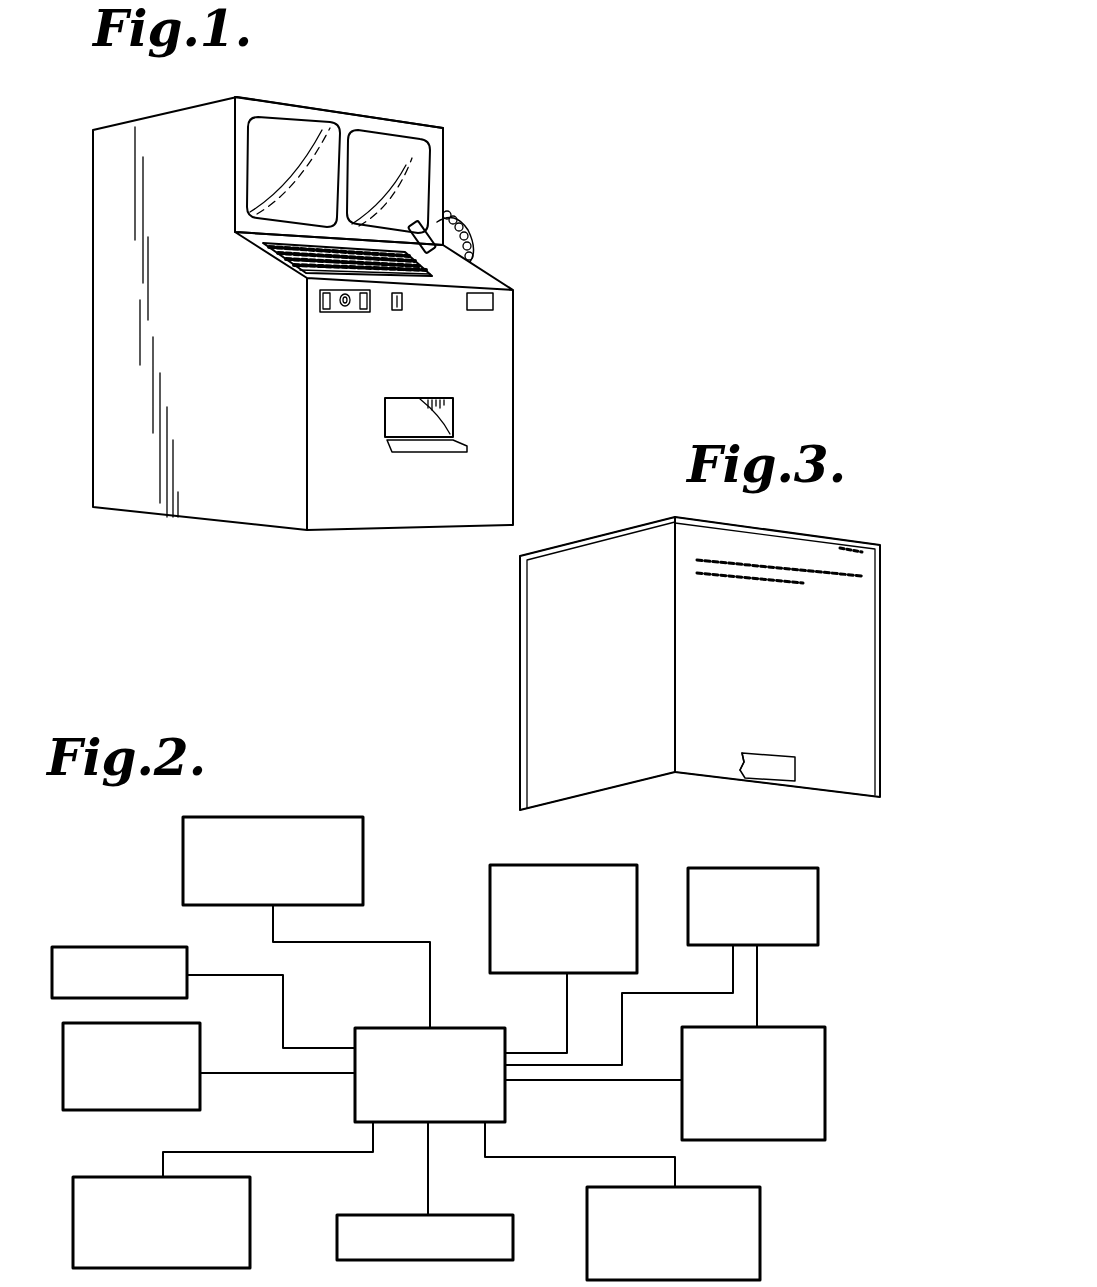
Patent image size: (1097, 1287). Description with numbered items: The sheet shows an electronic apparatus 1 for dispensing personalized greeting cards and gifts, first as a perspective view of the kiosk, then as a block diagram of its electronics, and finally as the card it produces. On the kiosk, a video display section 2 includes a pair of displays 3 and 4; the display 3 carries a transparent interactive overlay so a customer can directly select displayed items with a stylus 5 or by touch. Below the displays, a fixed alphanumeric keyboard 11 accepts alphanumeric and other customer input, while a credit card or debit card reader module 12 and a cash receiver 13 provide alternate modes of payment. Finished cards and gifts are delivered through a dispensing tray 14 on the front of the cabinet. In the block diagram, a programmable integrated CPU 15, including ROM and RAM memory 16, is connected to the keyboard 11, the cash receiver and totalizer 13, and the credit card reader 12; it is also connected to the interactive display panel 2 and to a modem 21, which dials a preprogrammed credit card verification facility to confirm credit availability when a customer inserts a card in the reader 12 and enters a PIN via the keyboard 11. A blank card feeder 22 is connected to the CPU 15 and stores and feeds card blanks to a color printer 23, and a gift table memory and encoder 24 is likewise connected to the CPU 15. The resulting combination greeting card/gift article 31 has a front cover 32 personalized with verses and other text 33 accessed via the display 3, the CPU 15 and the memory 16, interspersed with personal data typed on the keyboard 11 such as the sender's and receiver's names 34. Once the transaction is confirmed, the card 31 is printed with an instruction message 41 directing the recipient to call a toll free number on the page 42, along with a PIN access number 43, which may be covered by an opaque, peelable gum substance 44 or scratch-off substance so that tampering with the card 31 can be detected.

In FIG. 1, the apparatus for dispensing personalized greeting cards and gifts 1 is at (440, 82).
In FIG. 1, the video display section 2 is at (352, 118).
In FIG. 2, the video display section 2 is at (309, 817).
In FIG. 1, the display 3 is at (262, 190).
In FIG. 1, the display 4 is at (417, 203).
In FIG. 1, the stylus 5 is at (427, 230).
In FIG. 1, the alphanumeric keyboard 11 is at (272, 255).
In FIG. 2, the alphanumeric keyboard 11 is at (490, 1227).
In FIG. 1, the credit card or debit card reader module 12 is at (467, 317).
In FIG. 2, the credit card or debit card reader module 12 is at (752, 1238).
In FIG. 1, the cash receiver 13 is at (320, 316).
In FIG. 2, the cash receiver 13 is at (275, 1207).
In FIG. 1, the dispensing tray 14 is at (420, 452).
In FIG. 2, the CPU 15 is at (397, 1028).
In FIG. 2, the memory 16 is at (115, 947).
In FIG. 2, the modem 21 is at (66, 1068).
In FIG. 2, the blank card feeder 22 is at (815, 1093).
In FIG. 2, the color printer 23 is at (745, 868).
In FIG. 2, the gift table memory and encoder 24 is at (582, 865).
In FIG. 3, the combination greeting card/gift article 31 is at (618, 524).
In FIG. 3, the front cover 32 is at (522, 648).
In FIG. 3, the verses and other text 33 is at (635, 582).
In FIG. 3, the sender's and receiver's names 34 is at (618, 625).
In FIG. 3, the instruction message 41 is at (846, 557).
In FIG. 3, the page 42 is at (896, 673).
In FIG. 3, the PIN access number 43 is at (800, 779).
In FIG. 3, the opaque peelable gum substance 44 is at (751, 768).